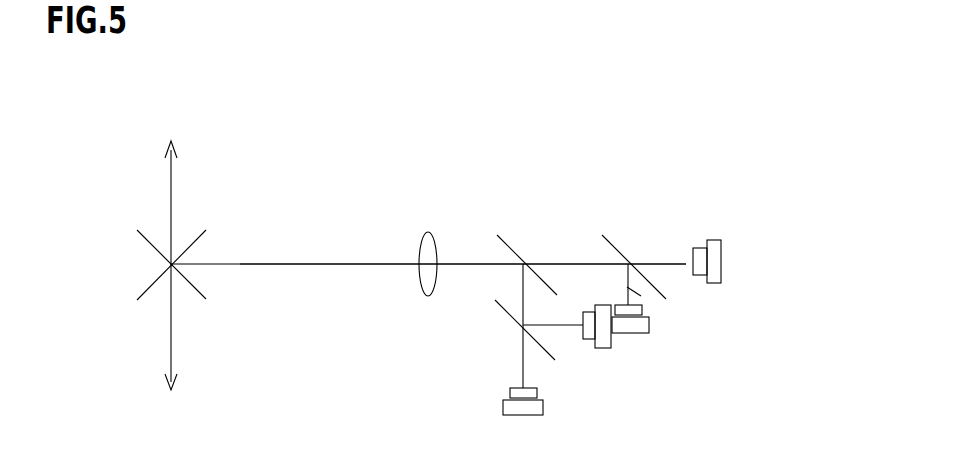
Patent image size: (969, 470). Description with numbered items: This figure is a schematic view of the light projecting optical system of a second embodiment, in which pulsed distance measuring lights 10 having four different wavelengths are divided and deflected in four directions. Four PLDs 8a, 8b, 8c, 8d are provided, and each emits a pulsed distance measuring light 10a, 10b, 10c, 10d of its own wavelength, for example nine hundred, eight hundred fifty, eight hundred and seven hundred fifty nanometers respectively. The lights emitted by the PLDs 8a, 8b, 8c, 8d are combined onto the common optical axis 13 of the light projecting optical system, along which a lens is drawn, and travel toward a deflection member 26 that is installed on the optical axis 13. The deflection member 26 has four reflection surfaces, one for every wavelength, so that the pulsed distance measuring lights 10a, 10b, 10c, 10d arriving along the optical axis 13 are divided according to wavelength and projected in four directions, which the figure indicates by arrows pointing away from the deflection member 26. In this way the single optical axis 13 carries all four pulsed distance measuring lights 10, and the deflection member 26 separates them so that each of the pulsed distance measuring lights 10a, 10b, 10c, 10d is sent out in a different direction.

The deflection member 26 is at (148, 262).
The pulsed distance measuring lights 10 is at (302, 266).
The pulsed distance measuring light 10a is at (171, 185).
The pulsed distance measuring light 10b is at (174, 332).
The pulsed distance measuring light 10c is at (568, 300).
The pulsed distance measuring light 10d is at (520, 361).
The optical axis 13 is at (365, 264).
The PLD 8a is at (713, 240).
The PLD 8b is at (666, 346).
The PLD 8c is at (596, 348).
The PLD 8d is at (503, 405).